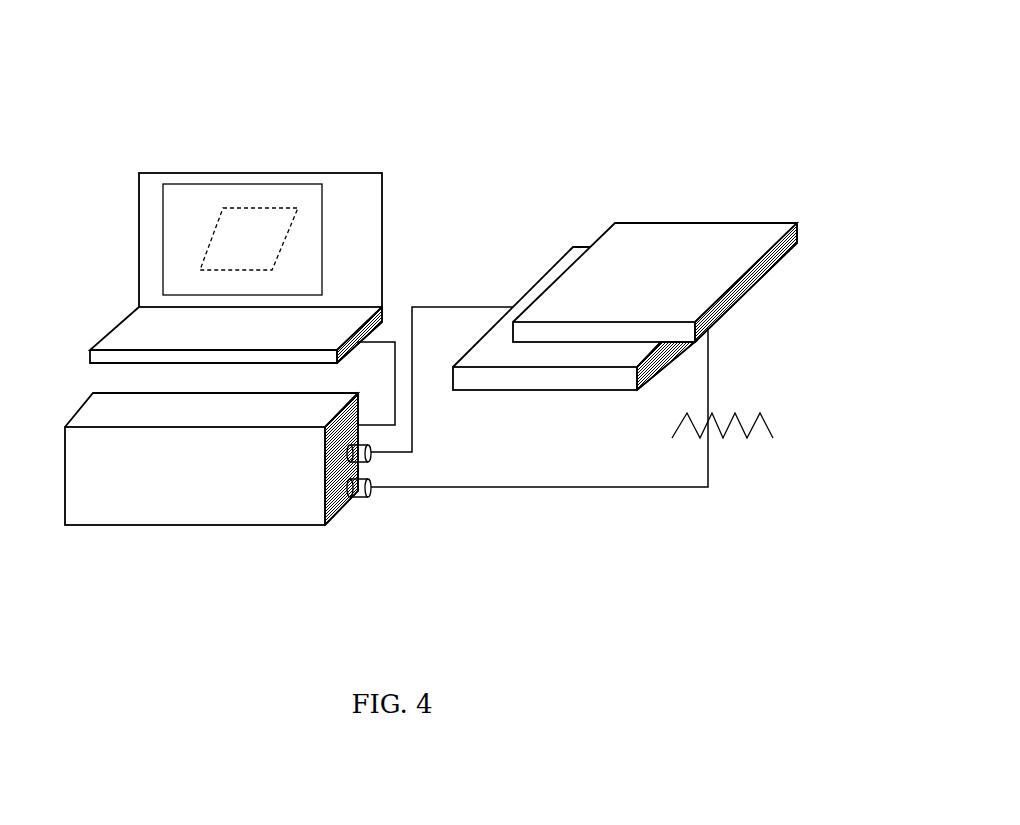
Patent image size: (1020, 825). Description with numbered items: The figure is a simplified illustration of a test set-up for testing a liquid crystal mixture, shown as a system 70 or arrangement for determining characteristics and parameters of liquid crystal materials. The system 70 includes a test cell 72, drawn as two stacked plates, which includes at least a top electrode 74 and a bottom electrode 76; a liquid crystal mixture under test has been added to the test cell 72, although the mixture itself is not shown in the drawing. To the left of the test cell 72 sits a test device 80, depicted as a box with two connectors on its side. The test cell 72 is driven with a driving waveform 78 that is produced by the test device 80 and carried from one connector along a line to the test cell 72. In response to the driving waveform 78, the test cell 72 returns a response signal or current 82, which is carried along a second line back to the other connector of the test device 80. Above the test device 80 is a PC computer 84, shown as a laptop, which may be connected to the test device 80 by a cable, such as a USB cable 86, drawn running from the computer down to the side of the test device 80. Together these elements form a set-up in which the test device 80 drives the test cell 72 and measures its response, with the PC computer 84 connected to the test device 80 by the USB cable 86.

The system 70 is at (597, 110).
The test cell 72 is at (673, 193).
The top electrode 74 is at (715, 240).
The bottom electrode 76 is at (587, 378).
The driving waveform 78 is at (500, 487).
The test device 80 is at (198, 490).
The response signal or current 82 is at (457, 307).
The PC computer 84 is at (132, 252).
The USB cable 86 is at (398, 361).